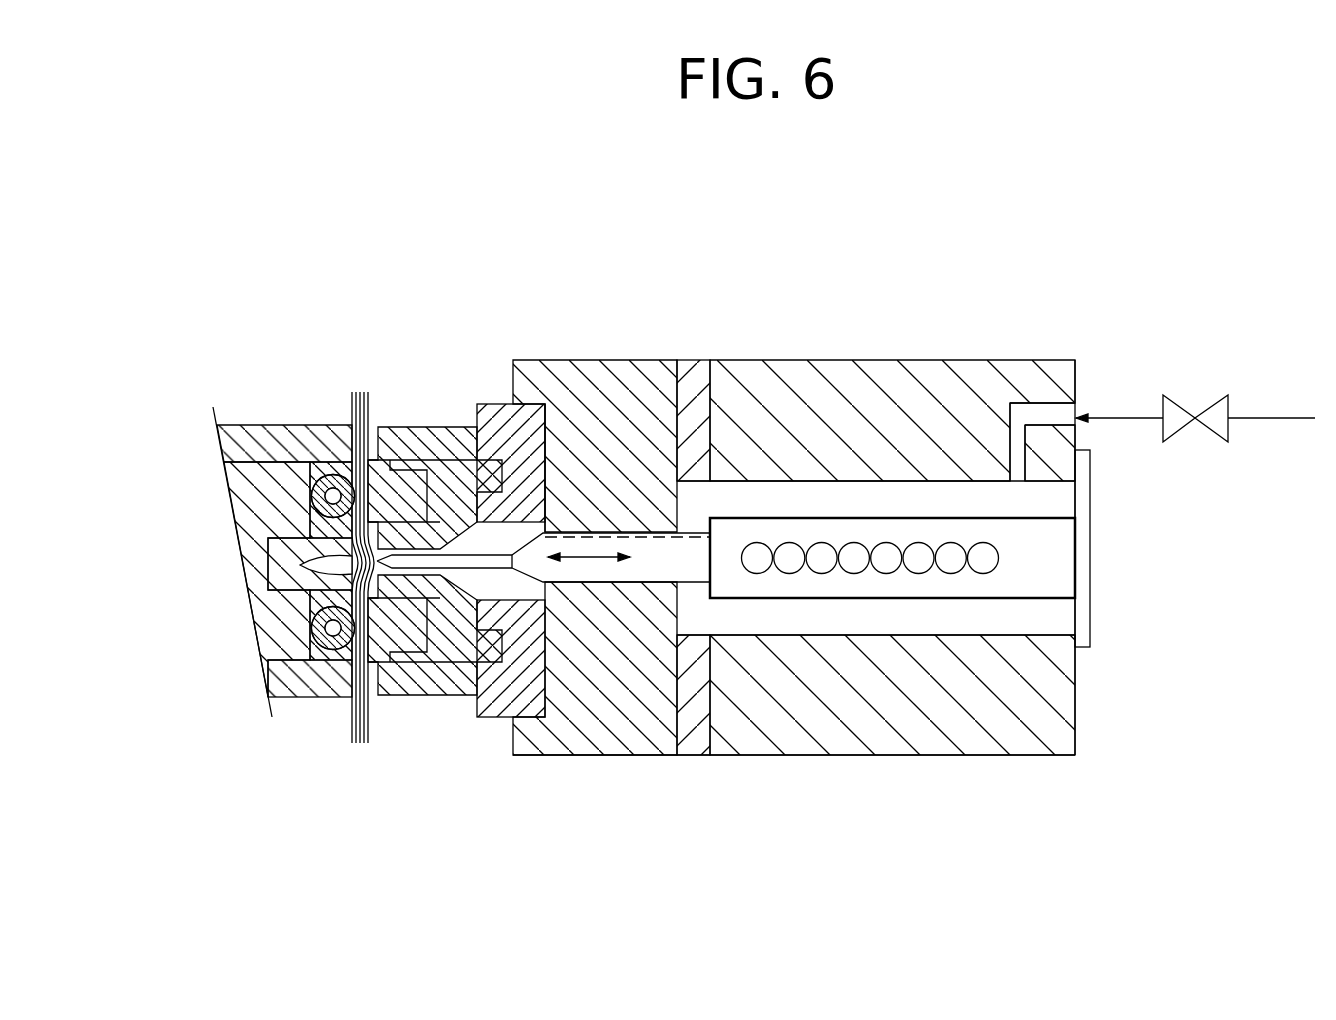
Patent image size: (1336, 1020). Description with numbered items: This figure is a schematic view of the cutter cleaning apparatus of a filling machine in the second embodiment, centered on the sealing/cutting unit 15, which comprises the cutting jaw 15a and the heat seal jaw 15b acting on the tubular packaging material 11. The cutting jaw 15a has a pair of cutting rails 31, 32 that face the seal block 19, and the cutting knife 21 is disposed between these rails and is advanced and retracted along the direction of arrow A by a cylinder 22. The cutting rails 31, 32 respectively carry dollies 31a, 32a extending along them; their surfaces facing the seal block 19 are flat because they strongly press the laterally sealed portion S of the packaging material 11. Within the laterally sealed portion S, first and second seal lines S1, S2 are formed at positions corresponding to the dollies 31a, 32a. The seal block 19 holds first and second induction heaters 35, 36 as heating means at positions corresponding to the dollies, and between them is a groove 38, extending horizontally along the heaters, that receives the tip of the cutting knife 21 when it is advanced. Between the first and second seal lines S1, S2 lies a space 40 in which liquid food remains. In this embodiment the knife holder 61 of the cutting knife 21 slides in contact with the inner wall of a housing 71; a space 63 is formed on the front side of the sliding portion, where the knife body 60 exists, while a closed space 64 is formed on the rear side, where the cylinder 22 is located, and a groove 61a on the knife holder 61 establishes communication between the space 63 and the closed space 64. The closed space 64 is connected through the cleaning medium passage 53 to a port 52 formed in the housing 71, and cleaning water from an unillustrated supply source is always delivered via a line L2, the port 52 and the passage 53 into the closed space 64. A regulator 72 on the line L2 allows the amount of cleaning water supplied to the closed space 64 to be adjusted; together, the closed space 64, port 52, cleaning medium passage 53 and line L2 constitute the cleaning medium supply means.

The sealing/cutting unit 15 is at (460, 505).
The cutting jaw 15a is at (656, 783).
The heat seal jaw 15b is at (290, 714).
The seal block 19 is at (256, 511).
The tubular packaging material 11 is at (372, 392).
The laterally sealed portion S is at (347, 700).
The first seal line S1 is at (425, 468).
The second seal line S2 is at (412, 668).
The cutting rail 31 is at (481, 418).
The dolly 31a is at (457, 452).
The cutting rail 32 is at (441, 707).
The dolly 32a is at (398, 690).
The first induction heater 35 is at (312, 488).
The second induction heater 36 is at (275, 646).
The groove 38 is at (300, 565).
The space 40 is at (305, 608).
The knife body 60 is at (495, 565).
The cutting knife 21 is at (603, 582).
The knife holder 61 is at (657, 755).
The groove 61a is at (627, 537).
The space 63 is at (547, 503).
The closed space 64 is at (935, 492).
The housing 71 is at (822, 356).
The cleaning medium passage 53 is at (1042, 410).
The port 52 is at (1082, 410).
The regulator 72 is at (1215, 442).
The line L2 is at (1271, 418).
The cylinder 22 is at (1013, 598).
The arrow A is at (605, 558).